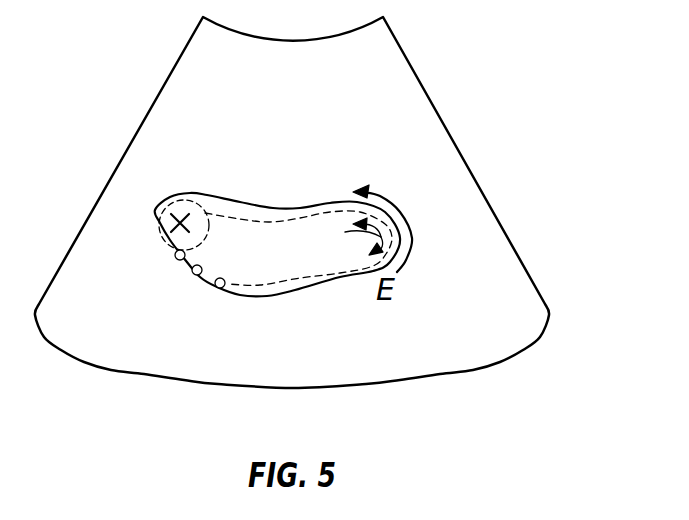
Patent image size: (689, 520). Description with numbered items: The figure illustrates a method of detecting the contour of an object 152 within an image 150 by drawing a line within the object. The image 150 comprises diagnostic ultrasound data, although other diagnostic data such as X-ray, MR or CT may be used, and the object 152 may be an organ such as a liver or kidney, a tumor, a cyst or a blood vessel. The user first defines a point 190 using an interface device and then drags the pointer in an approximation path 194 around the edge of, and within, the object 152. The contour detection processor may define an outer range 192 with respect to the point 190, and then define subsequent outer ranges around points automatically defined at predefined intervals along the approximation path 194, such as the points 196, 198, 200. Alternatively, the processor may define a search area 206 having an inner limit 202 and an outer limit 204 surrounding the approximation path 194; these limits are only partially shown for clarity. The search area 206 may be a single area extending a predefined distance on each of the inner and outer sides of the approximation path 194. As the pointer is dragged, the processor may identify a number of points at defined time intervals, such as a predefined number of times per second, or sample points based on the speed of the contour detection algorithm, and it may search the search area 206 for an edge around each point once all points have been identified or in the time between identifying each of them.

The image 150 is at (421, 80).
The object 152 is at (340, 279).
The point 190 is at (157, 234).
The outer range 192 is at (201, 193).
The approximation path 194 is at (315, 212).
The point 196 is at (175, 270).
The point 198 is at (197, 278).
The point 200 is at (222, 290).
The inner limit 202 is at (338, 236).
The outer limit 204 is at (413, 241).
The search area 206 is at (412, 239).